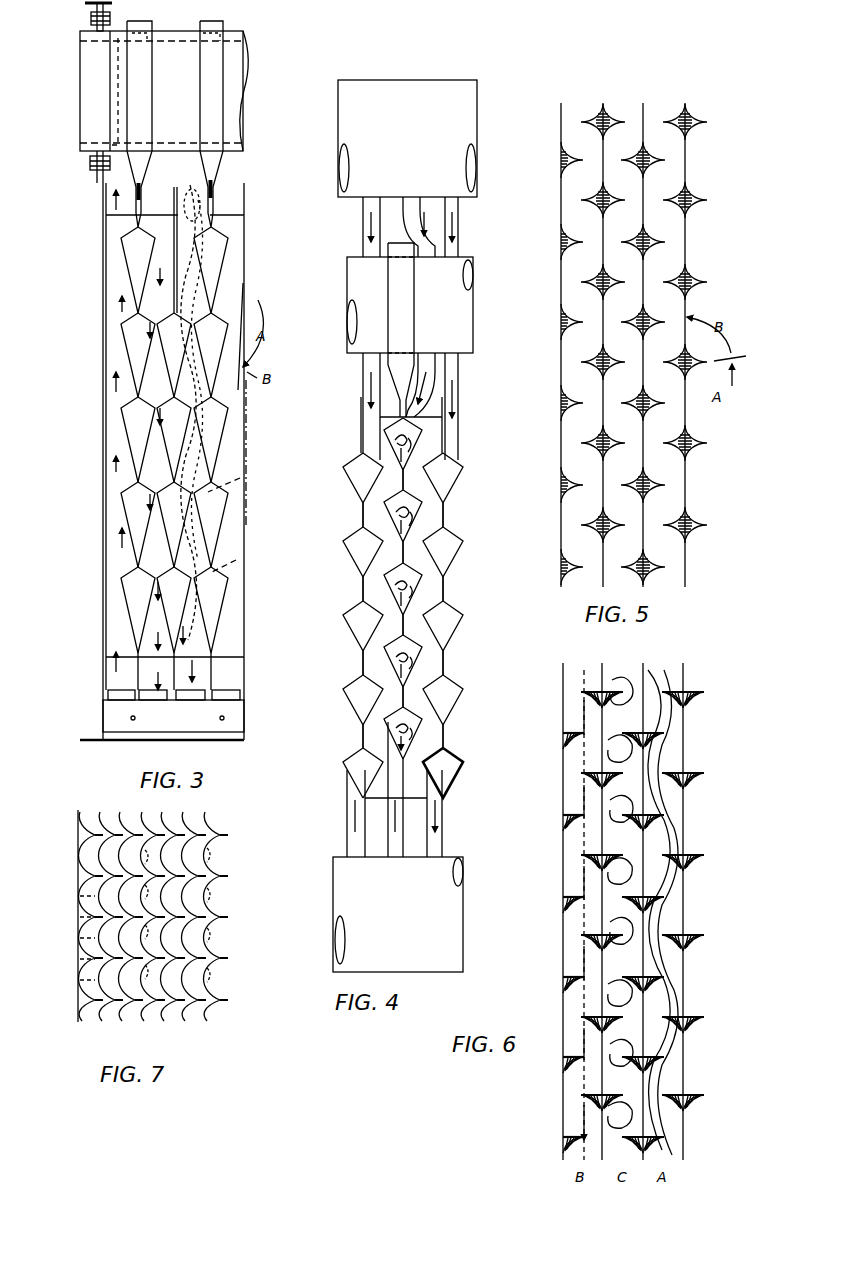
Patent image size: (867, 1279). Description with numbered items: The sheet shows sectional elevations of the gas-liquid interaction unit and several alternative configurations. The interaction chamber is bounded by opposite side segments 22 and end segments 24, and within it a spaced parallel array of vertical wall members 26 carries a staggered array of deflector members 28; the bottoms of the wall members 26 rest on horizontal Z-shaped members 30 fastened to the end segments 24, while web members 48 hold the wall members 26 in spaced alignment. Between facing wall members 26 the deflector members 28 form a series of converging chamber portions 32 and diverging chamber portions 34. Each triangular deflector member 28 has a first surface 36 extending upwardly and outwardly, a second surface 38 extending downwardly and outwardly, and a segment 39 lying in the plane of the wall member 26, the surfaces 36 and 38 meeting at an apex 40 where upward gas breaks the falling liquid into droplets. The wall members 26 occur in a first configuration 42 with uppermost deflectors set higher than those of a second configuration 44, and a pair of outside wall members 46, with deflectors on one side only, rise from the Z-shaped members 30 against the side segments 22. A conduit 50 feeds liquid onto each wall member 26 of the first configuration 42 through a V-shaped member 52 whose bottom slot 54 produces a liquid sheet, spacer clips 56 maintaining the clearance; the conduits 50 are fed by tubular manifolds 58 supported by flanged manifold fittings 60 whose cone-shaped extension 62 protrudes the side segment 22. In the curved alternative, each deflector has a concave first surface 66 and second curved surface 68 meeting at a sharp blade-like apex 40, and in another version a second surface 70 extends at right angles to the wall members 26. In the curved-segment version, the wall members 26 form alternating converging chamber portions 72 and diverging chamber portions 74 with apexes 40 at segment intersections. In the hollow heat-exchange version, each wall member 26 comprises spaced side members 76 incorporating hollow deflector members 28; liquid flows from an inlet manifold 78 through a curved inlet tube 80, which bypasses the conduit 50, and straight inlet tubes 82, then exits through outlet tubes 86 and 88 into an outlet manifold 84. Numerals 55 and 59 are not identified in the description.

In FIG. 3, the side segments 22 is at (103, 712).
In FIG. 3, the end segments 24 is at (228, 683).
In FIG. 3, the wall members 26 is at (172, 606).
In FIG. 4, the wall members 26 is at (447, 818).
In FIG. 5, the wall members 26 is at (668, 174).
In FIG. 6, the wall members 26 is at (600, 944).
In FIG. 7, the wall members 26 is at (200, 1020).
In FIG. 3, the deflector members 28 is at (175, 482).
In FIG. 4, the deflector members 28 is at (455, 784).
In FIG. 5, the deflector members 28 is at (687, 290).
In FIG. 6, the deflector members 28 is at (600, 862).
In FIG. 3, the Z-shaped members 30 is at (232, 708).
In FIG. 3, the converging chamber portions 32 is at (232, 628).
In FIG. 3, the diverging chamber portions 34 is at (236, 560).
In FIG. 3, the first surface 36 is at (246, 398).
In FIG. 3, the second surface 38 is at (246, 284).
In FIG. 3, the segment 39 is at (246, 520).
In FIG. 3, the apex 40 is at (246, 410).
In FIG. 5, the apex 40 is at (707, 282).
In FIG. 6, the apex 40 is at (582, 856).
In FIG. 7, the apex 40 is at (94, 997).
In FIG. 3, the first configuration 42 is at (232, 240).
In FIG. 3, the second configuration 44 is at (245, 184).
In FIG. 3, the outside wall members 46 is at (108, 452).
In FIG. 3, the web members 48 is at (244, 657).
In FIG. 3, the conduit 50 is at (172, 30).
In FIG. 4, the conduit 50 is at (418, 322).
In FIG. 3, the V-shaped member 52 is at (200, 160).
In FIG. 3, the slot 54 is at (214, 186).
In FIG. 3, the header chamber 55 is at (205, 68).
In FIG. 3, the spacer clips 56 is at (222, 150).
In FIG. 3, the tubular manifolds 58 is at (236, 31).
In FIG. 4, the tubular manifolds 58 is at (470, 257).
In FIG. 3, the partition 59 is at (203, 44).
In FIG. 4, the partition 59 is at (402, 262).
In FIG. 3, the flanged manifold fittings 60 is at (80, 108).
In FIG. 3, the cone-shaped extension 62 is at (118, 38).
In FIG. 5, the first surface 66 is at (697, 290).
In FIG. 6, the first surface 66 is at (692, 784).
In FIG. 7, the first surface 66 is at (80, 888).
In FIG. 5, the second curved surface 68 is at (692, 276).
In FIG. 7, the second curved surface 68 is at (80, 852).
In FIG. 6, the second surface 70 is at (690, 773).
In FIG. 7, the converging chamber portions 72 is at (80, 970).
In FIG. 7, the diverging chamber portions 74 is at (80, 948).
In FIG. 4, the side members 76 is at (446, 740).
In FIG. 4, the inlet manifold 78 is at (418, 125).
In FIG. 4, the inlet tube 80 is at (428, 205).
In FIG. 4, the inlet tubes 82 is at (381, 205).
In FIG. 4, the outlet manifold 84 is at (407, 929).
In FIG. 4, the outlet tubes 86 is at (408, 845).
In FIG. 4, the outlet tubes 88 is at (444, 840).